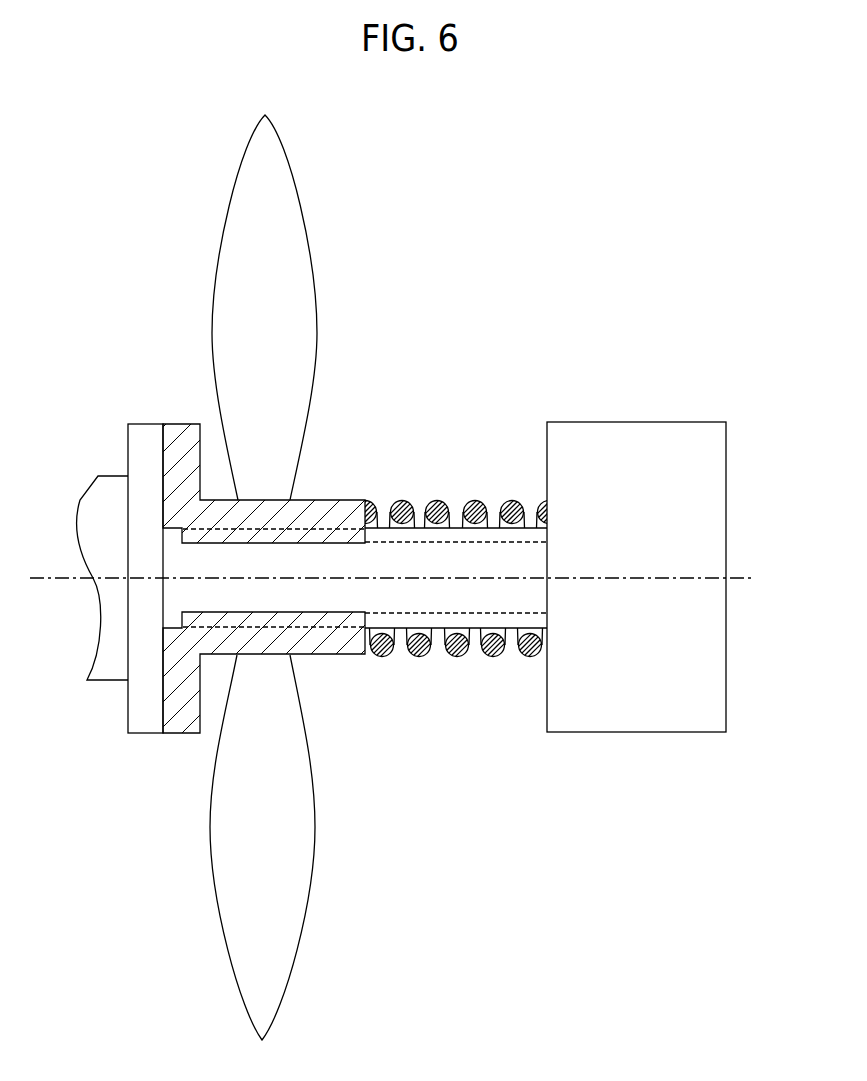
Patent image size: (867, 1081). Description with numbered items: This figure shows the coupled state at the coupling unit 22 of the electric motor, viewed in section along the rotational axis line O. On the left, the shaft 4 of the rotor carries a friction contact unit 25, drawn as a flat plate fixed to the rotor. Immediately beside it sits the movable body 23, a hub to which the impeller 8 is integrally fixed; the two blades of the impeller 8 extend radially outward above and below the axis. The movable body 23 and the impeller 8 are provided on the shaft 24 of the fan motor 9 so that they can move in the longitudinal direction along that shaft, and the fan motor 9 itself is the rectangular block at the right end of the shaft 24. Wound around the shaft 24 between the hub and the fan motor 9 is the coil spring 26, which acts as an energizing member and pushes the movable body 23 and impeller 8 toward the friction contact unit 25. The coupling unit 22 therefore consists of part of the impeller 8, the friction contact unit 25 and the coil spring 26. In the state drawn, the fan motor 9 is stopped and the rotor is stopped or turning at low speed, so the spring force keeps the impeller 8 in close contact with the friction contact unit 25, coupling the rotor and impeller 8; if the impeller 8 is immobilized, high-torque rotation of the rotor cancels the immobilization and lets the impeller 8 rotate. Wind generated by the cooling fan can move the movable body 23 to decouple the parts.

The coupling unit 22 is at (446, 216).
The impeller 8 is at (318, 318).
The fan motor 9 is at (617, 422).
The shaft 4 is at (111, 474).
The friction contact unit 25 is at (144, 424).
The movable body 23 is at (185, 424).
The shaft 24 is at (418, 528).
The coil spring 26 is at (471, 500).
The rotational axis line O is at (45, 578).